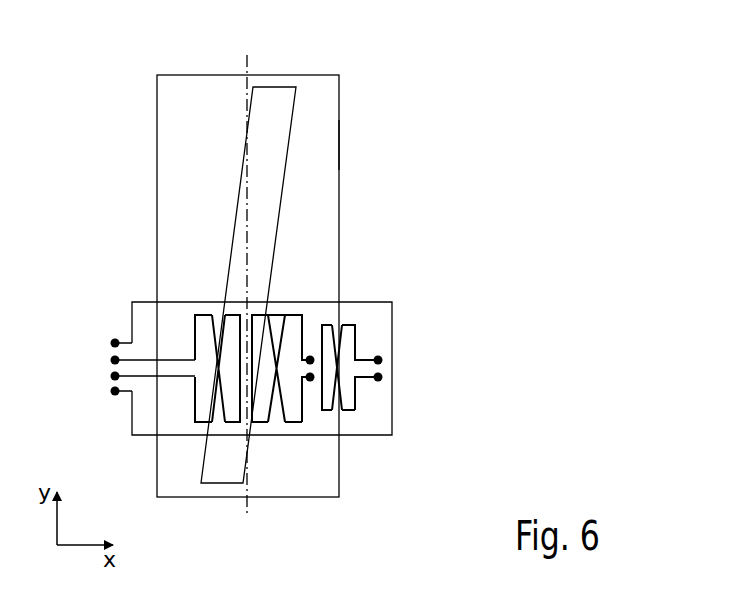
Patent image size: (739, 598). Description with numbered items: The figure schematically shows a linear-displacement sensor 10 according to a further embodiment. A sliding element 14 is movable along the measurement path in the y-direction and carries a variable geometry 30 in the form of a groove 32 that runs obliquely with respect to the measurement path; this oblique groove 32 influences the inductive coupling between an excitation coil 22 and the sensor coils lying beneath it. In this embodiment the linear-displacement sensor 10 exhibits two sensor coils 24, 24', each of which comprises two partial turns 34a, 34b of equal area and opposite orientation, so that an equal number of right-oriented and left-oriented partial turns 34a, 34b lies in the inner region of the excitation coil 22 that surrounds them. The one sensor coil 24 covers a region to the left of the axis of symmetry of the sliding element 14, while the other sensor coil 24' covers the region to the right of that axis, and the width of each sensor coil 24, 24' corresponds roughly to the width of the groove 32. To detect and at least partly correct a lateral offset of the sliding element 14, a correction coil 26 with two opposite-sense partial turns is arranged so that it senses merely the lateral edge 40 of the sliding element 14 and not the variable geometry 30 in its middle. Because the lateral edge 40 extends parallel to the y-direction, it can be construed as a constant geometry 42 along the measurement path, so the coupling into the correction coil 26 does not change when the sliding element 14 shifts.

The linear-displacement sensor 10 is at (380, 82).
The sliding element 14 is at (203, 85).
The excitation coil 22 is at (392, 405).
The sensor coil 24 is at (168, 446).
The sensor coil 24' is at (333, 443).
The correction coil 26 is at (357, 342).
The variable geometry 30 is at (263, 112).
The groove 32 is at (283, 95).
The partial turn 34a is at (200, 405).
The partial turn 34b is at (237, 325).
The lateral edge 40 is at (339, 143).
The constant geometry 42 is at (378, 117).